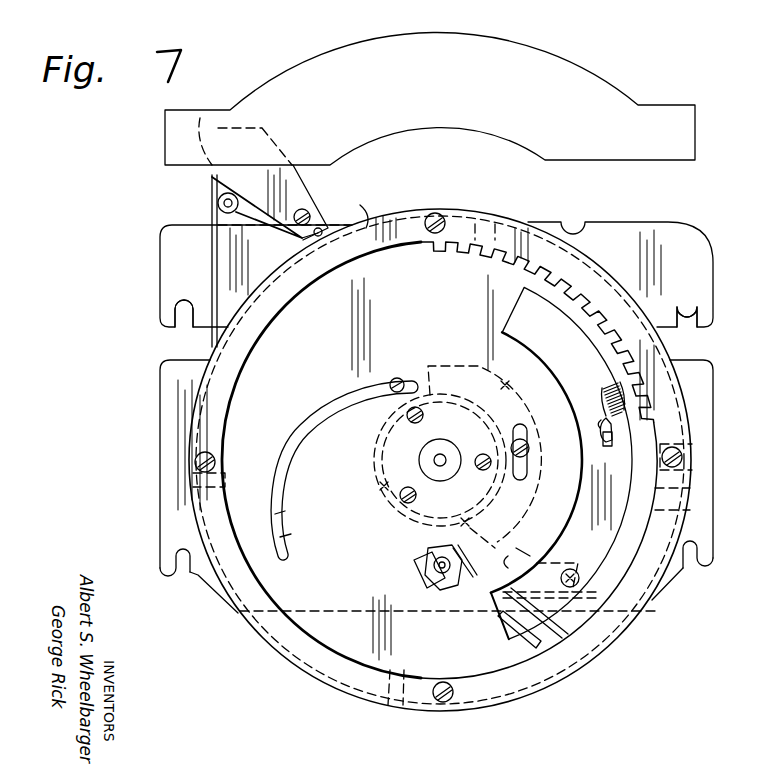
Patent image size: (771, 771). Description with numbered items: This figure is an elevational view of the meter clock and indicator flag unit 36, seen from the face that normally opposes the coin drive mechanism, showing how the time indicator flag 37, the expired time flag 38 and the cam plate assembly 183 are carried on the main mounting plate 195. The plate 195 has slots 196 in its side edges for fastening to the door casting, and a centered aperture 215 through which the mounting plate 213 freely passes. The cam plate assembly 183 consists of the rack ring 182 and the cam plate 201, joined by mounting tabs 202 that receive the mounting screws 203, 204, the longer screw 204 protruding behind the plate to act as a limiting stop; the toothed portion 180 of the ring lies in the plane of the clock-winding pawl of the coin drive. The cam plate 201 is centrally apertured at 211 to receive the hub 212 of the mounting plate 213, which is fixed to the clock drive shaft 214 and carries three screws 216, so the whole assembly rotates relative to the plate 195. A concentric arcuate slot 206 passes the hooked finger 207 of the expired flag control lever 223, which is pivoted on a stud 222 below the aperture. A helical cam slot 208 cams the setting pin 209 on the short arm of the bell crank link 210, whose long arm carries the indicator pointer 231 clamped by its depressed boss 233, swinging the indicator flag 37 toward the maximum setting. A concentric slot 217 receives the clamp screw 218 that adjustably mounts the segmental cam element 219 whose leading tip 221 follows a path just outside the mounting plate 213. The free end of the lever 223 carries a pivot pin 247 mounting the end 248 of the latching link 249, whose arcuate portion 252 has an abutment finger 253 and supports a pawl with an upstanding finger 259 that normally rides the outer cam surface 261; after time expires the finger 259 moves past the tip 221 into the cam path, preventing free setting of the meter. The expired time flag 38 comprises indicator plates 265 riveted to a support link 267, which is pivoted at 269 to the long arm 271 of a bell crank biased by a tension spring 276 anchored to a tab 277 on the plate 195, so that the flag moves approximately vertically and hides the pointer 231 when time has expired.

The meter clock and indicator flag unit 36 is at (697, 222).
The time indicator flag 37 is at (214, 176).
The expired time flag 38 is at (662, 108).
The ratchet teeth sector 180 is at (438, 254).
The rack ring 182 is at (581, 651).
The cam plate assembly 183 is at (334, 627).
The main mounting plate 195 is at (713, 405).
The slots 196 is at (176, 314).
The cam plate 201 is at (388, 573).
The mounting tabs 202 is at (483, 225).
The mounting screws 203 is at (437, 214).
The mounting screw 204 is at (684, 457).
The concentric arcuate slot 206 is at (552, 538).
The hooked finger 207 is at (534, 650).
The arcuate cam slot 208 is at (341, 394).
The cam pin 209 is at (397, 378).
The bell crank link 210 is at (348, 228).
The central aperture 211 is at (447, 452).
The hub 212 is at (450, 478).
The mounting plate 213 is at (380, 488).
The clock drive shaft 214 is at (420, 452).
The centered aperture 215 is at (468, 525).
The mounting screws 216 is at (424, 415).
The concentric slot 217 is at (522, 424).
The clamp screw 218 is at (529, 453).
The segmental cam element 219 is at (506, 381).
The leading tip 221 is at (500, 592).
The pivot stud 222 is at (496, 618).
The expired flag control lever 223 is at (512, 585).
The indicator pointer 231 is at (313, 203).
The depressed boss 233 is at (311, 214).
The pivot pin 247 is at (578, 565).
The end of latching link 248 is at (560, 633).
The latching link 249 is at (284, 538).
The arcuate intermediate portion 252 is at (492, 618).
The abutment pivot finger 253 is at (418, 578).
The pawl finger 259 is at (432, 556).
The outer cam surface 261 is at (520, 551).
The indicator plates 265 is at (363, 50).
The support link 267 is at (212, 263).
The pivoted connection 269 is at (218, 206).
The long arm 271 is at (338, 242).
The tension spring 276 is at (606, 390).
The spring anchor tab 277 is at (612, 438).